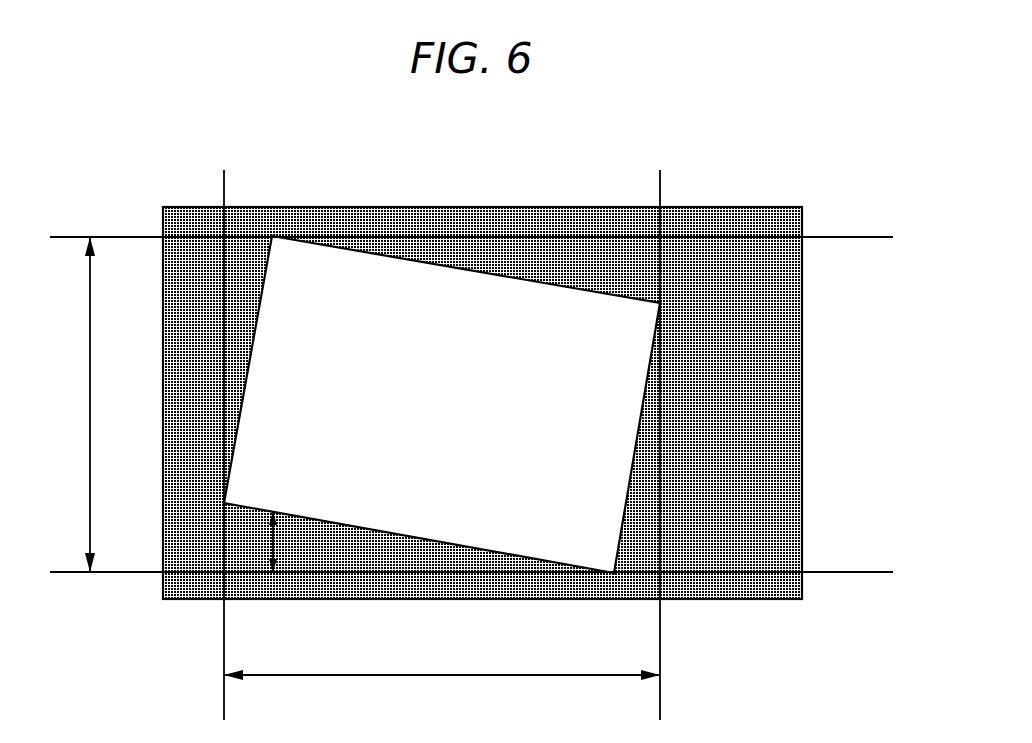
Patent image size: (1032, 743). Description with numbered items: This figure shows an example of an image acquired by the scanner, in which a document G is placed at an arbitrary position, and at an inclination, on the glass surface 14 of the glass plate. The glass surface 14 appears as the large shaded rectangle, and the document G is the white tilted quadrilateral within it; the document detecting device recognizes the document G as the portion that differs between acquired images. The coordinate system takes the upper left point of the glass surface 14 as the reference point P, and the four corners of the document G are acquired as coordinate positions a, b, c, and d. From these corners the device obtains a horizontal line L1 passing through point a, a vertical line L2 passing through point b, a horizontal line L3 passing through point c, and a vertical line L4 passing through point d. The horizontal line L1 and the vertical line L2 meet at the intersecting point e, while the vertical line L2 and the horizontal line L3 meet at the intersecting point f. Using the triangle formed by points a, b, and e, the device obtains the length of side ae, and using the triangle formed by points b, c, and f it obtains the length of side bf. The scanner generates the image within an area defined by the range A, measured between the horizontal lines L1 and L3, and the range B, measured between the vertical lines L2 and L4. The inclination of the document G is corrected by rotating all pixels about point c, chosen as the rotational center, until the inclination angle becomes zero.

The glass surface 14 is at (775, 384).
The reference point P is at (163, 207).
The document G is at (528, 320).
The horizontal line L1 is at (837, 237).
The vertical line L2 is at (222, 177).
The horizontal line L3 is at (833, 572).
The vertical line L4 is at (662, 190).
The coordinate position a is at (272, 236).
The coordinate position b is at (224, 503).
The coordinate position c is at (615, 575).
The coordinate position d is at (660, 303).
The intersecting point e is at (223, 237).
The intersecting point f is at (222, 573).
The range A is at (73, 404).
The range B is at (442, 659).